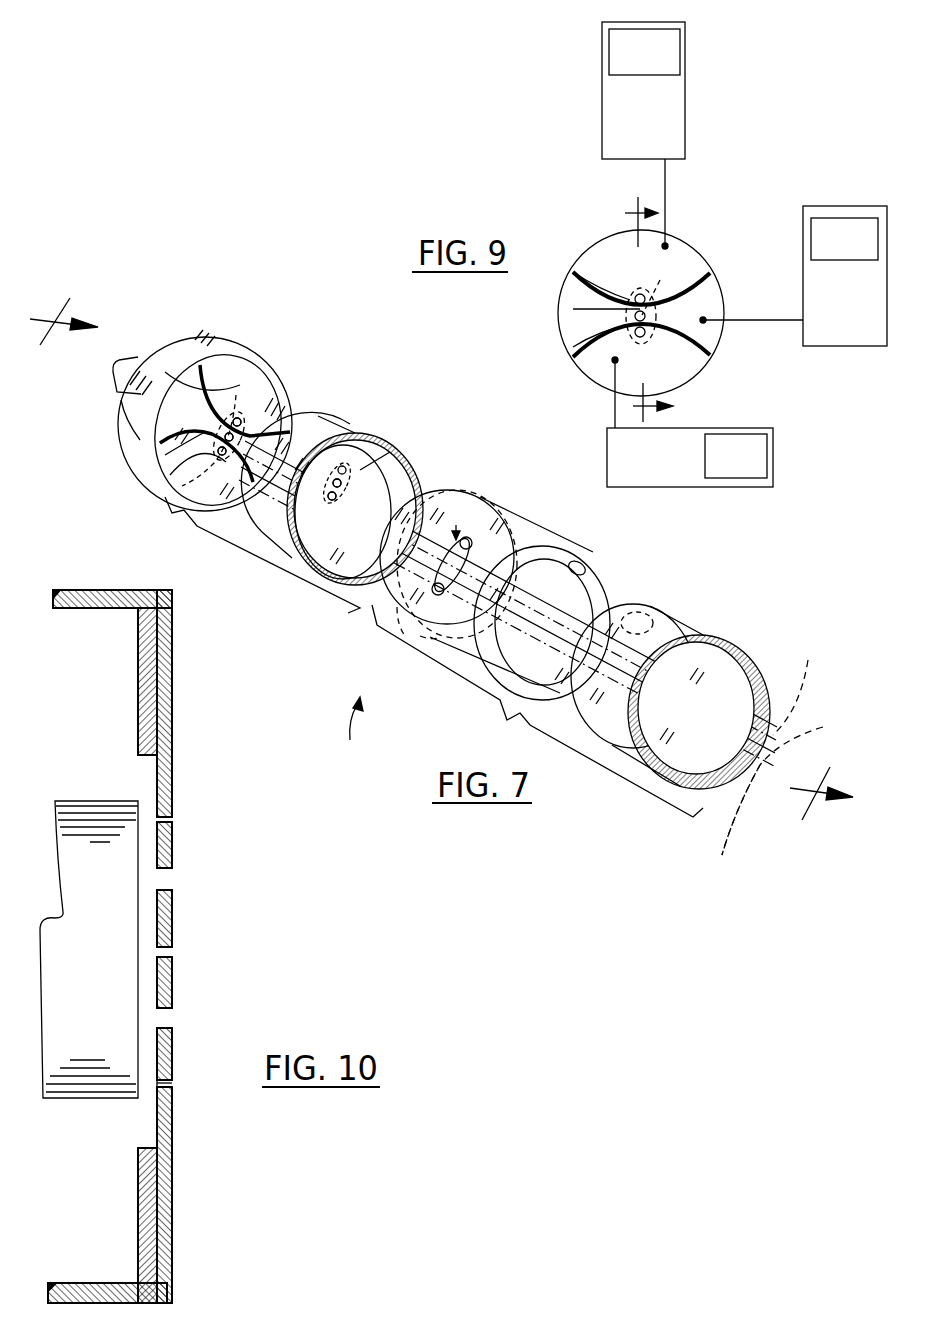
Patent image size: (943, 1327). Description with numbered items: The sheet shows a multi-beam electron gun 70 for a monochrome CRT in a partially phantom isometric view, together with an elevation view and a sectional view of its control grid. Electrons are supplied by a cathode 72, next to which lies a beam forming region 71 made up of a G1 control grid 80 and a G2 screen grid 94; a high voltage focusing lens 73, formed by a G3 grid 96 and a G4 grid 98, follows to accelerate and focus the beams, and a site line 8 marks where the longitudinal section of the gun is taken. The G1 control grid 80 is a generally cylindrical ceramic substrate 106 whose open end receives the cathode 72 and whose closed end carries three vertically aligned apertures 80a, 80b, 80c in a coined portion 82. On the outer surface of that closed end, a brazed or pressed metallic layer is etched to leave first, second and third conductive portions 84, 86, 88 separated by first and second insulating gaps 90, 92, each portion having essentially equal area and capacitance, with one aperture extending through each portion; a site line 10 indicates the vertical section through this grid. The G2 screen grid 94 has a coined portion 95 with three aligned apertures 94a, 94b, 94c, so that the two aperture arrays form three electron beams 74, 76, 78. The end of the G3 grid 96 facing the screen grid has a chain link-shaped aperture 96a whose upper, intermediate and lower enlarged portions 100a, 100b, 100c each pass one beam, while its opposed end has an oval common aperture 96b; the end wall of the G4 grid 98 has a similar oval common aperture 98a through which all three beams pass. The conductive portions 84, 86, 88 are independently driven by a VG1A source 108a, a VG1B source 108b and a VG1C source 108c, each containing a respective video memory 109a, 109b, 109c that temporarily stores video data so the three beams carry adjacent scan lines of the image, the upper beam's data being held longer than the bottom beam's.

In FIG. 7, the site line 8— 8 is at (441, 558).
In FIG. 9, the site line 10— 10 is at (649, 309).
In FIG. 7, the multi-beam electron gun 70 is at (353, 729).
In FIG. 7, the beam forming region 71 is at (260, 555).
In FIG. 7, the cathode 72 is at (137, 358).
In FIG. 10, the cathode 72 is at (74, 1009).
In FIG. 7, the high voltage focusing lens 73 is at (537, 711).
In FIG. 7, the upper electron beam 74 is at (799, 684).
In FIG. 7, the intermediate electron beam 76 is at (842, 728).
In FIG. 7, the bottom electron beam 78 is at (734, 820).
In FIG. 7, the G1 control grid 80 is at (190, 324).
In FIG. 9, the G1 control grid 80 is at (683, 223).
In FIG. 10, the G1 control grid 80 is at (205, 1178).
In FIG. 7, the first aperture 80a is at (247, 422).
In FIG. 9, the first aperture 80a is at (640, 294).
In FIG. 10, the first aperture 80a is at (172, 817).
In FIG. 7, the second aperture 80b is at (225, 460).
In FIG. 9, the second aperture 80b is at (657, 315).
In FIG. 10, the second aperture 80b is at (172, 950).
In FIG. 7, the third aperture 80c is at (228, 527).
In FIG. 9, the third aperture 80c is at (648, 336).
In FIG. 10, the third aperture 80c is at (172, 1083).
In FIG. 7, the coined portion 82 is at (236, 395).
In FIG. 9, the coined portion 82 is at (652, 290).
In FIG. 7, the first conductive portion 84 is at (247, 393).
In FIG. 9, the first conductive portion 84 is at (607, 252).
In FIG. 10, the first conductive portion 84 is at (172, 730).
In FIG. 7, the second conductive portion 86 is at (166, 455).
In FIG. 9, the second conductive portion 86 is at (573, 309).
In FIG. 10, the second conductive portion 86 is at (172, 917).
In FIG. 7, the third conductive portion 88 is at (207, 498).
In FIG. 9, the third conductive portion 88 is at (607, 373).
In FIG. 10, the third conductive portion 88 is at (172, 1225).
In FIG. 7, the first insulating gap 90 is at (218, 352).
In FIG. 9, the first insulating gap 90 is at (587, 267).
In FIG. 10, the first insulating gap 90 is at (165, 887).
In FIG. 7, the second insulating gap 92 is at (175, 478).
In FIG. 9, the second insulating gap 92 is at (573, 347).
In FIG. 10, the second insulating gap 92 is at (165, 1022).
In FIG. 7, the G2 screen grid 94 is at (340, 419).
In FIG. 7, the first G2 aperture 94a is at (377, 448).
In FIG. 7, the second G2 aperture 94b is at (340, 483).
In FIG. 7, the third G2 aperture 94c is at (320, 513).
In FIG. 7, the coined portion 95 is at (337, 540).
In FIG. 7, the G3 grid 96 is at (503, 507).
In FIG. 7, the chain link-shaped aperture 96a is at (463, 520).
In FIG. 7, the oval common aperture 96b is at (592, 562).
In FIG. 7, the G4 grid 98 is at (688, 618).
In FIG. 7, the oval shaped common aperture 98a is at (650, 605).
In FIG. 7, the upper enlarged portion 100a is at (530, 512).
In FIG. 7, the intermediate enlarged portion 100b is at (397, 612).
In FIG. 7, the lower enlarged portion 100c is at (430, 647).
In FIG. 7, the ceramic substrate 106 is at (135, 405).
In FIG. 10, the ceramic substrate 106 is at (88, 1283).
In FIG. 9, the VG1A source 108a is at (678, 118).
In FIG. 9, the VG1B source 108b is at (860, 337).
In FIG. 9, the VG1C source 108c is at (675, 475).
In FIG. 9, the video memory 109a is at (665, 67).
In FIG. 9, the video memory 109b is at (866, 257).
In FIG. 9, the video memory 109c is at (757, 476).